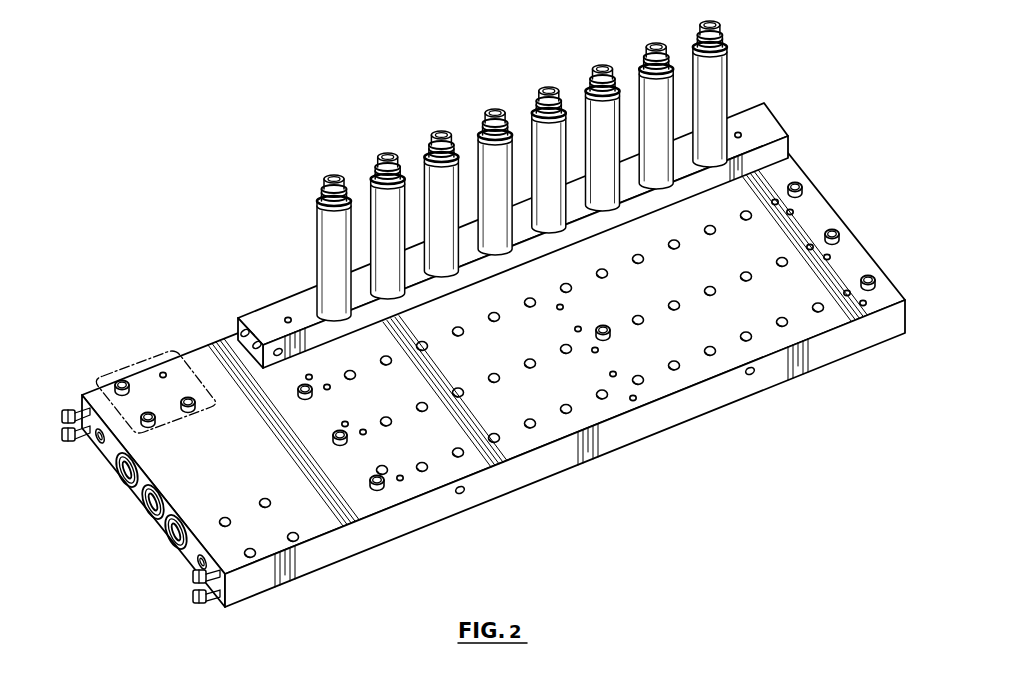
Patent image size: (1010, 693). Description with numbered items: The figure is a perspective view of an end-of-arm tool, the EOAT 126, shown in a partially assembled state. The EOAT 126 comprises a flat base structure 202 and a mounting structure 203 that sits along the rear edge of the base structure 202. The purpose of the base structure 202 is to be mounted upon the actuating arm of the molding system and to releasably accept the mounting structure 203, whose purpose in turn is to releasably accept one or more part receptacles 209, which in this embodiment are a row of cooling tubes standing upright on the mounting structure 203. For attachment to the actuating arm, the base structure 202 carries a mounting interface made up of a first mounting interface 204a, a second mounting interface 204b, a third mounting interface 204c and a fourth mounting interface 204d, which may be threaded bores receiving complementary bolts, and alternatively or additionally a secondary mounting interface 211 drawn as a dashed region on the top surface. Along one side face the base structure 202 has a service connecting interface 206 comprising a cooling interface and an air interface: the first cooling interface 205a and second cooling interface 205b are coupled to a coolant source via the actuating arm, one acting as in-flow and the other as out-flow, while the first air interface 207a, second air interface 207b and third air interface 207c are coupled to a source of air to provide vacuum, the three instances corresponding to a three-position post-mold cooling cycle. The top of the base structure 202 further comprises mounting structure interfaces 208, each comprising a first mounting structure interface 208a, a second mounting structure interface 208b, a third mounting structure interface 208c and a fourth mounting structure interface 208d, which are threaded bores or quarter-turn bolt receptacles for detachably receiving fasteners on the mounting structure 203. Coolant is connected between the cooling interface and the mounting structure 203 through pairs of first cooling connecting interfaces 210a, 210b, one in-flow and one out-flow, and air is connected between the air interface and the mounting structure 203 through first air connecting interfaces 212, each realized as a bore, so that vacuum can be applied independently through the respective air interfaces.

The EOAT 126 is at (471, 330).
The base structure 202 is at (306, 590).
The mounting structure 203 is at (254, 310).
The first mounting interface 204a is at (193, 582).
The second mounting interface 204b is at (177, 611).
The third mounting interface 204c is at (70, 410).
The fourth mounting interface 204d is at (65, 430).
The first cooling interface 205a is at (97, 443).
The second cooling interface 205b is at (194, 570).
The service connecting interface 206 is at (117, 493).
The first air interface 207a is at (118, 486).
The second air interface 207b is at (147, 511).
The third air interface 207c is at (168, 534).
The mounting structure interface 208 is at (652, 423).
The first mounting structure interface 208a is at (403, 483).
The second mounting structure interface 208b is at (635, 402).
The third mounting structure interface 208c is at (614, 378).
The fourth mounting structure interface 208d is at (828, 345).
The part receptacles 209 is at (740, 70).
The first cooling connecting interface 210a is at (381, 490).
The first cooling connecting interface 210b is at (871, 274).
The secondary mounting interface 211 is at (138, 358).
The first air connecting interfaces 212 is at (749, 342).